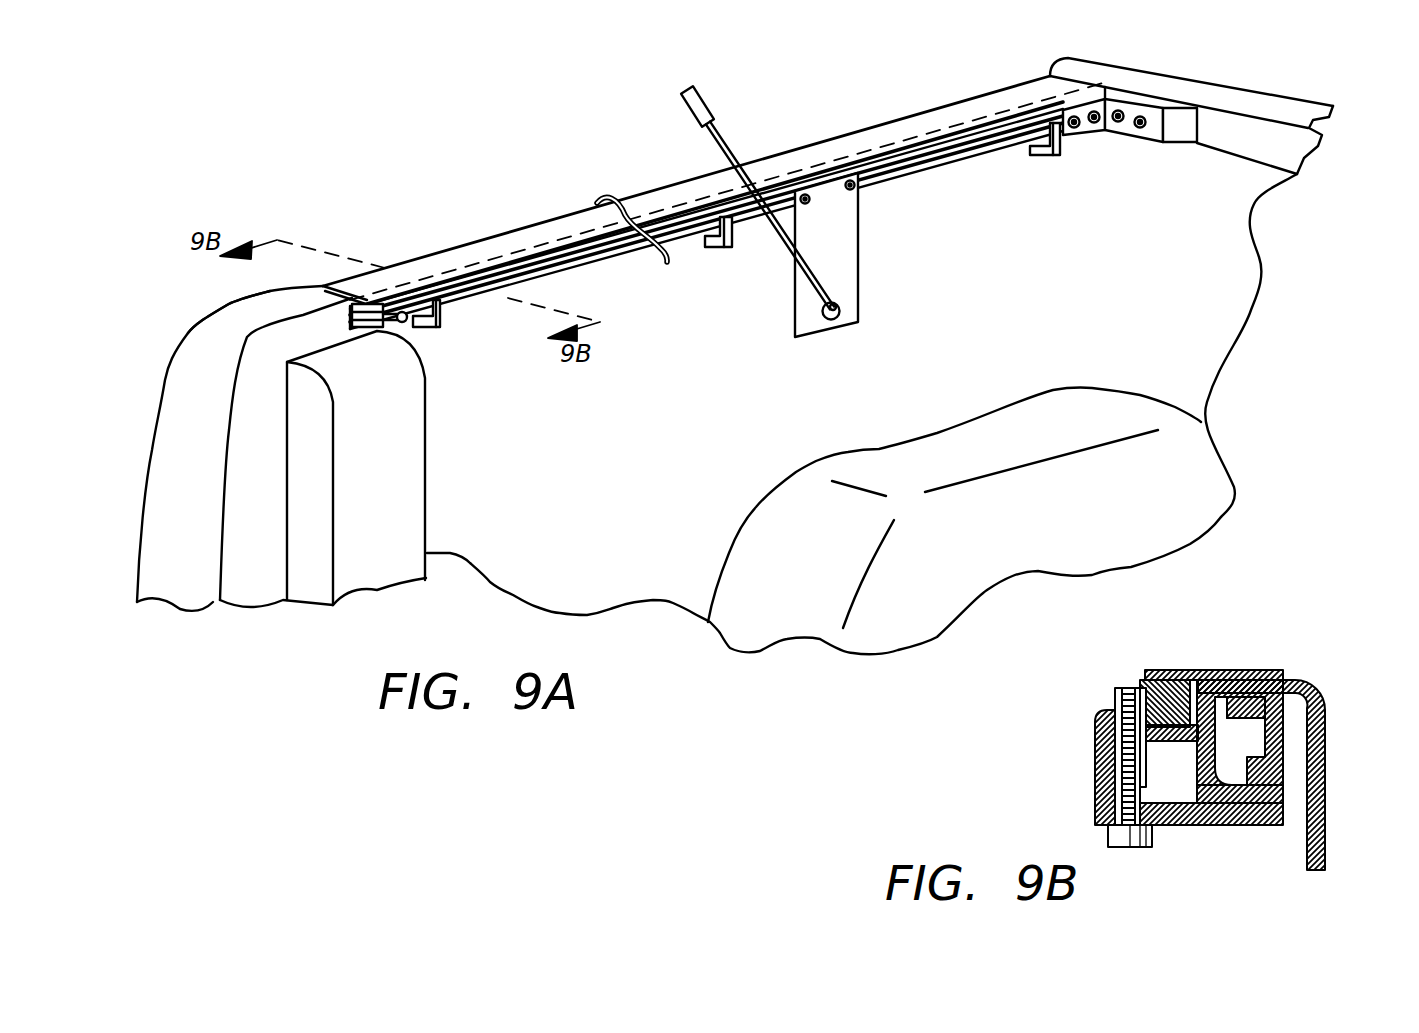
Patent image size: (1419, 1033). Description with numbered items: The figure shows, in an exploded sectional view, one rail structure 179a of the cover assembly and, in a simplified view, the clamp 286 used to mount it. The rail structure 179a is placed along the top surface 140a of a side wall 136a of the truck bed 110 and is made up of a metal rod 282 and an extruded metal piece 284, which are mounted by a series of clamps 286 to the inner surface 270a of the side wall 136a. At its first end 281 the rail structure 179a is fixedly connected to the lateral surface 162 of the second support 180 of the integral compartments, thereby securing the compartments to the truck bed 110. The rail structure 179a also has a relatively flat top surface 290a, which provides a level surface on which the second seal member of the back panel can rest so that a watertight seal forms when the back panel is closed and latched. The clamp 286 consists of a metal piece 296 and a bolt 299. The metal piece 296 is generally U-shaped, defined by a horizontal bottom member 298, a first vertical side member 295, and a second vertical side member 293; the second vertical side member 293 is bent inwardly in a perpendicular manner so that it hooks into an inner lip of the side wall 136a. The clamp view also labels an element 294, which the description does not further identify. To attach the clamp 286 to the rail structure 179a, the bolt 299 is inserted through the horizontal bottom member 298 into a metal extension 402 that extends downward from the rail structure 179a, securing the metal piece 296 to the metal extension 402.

In FIG. 9A, the truck bed 110 is at (190, 462).
In FIG. 9A, the side wall 136a is at (212, 367).
In FIG. 9A, the top surface 140a is at (418, 264).
In FIG. 9A, the lateral surface 162 is at (1232, 123).
In FIG. 9A, the rail structure 179a is at (557, 238).
In FIG. 9A, the second support 180 is at (1293, 117).
In FIG. 9A, the inner surface 270a is at (305, 338).
In FIG. 9A, the first end 281 is at (1107, 97).
In FIG. 9A, the metal rod 282 is at (917, 172).
In FIG. 9A, the extruded metal piece 284 is at (968, 117).
In FIG. 9A, the clamp 286 is at (432, 330).
In FIG. 9B, the clamp 286 is at (1193, 668).
In FIG. 9A, the flat top surface 290a is at (673, 203).
In FIG. 9B, the second vertical side member 293 is at (1287, 744).
In FIG. 9B, the channel member 294 is at (1248, 707).
In FIG. 9B, the first vertical side member 295 is at (1092, 722).
In FIG. 9B, the metal piece 296 is at (1257, 810).
In FIG. 9B, the horizontal bottom member 298 is at (1190, 827).
In FIG. 9B, the bolt 299 is at (1123, 838).
In FIG. 9B, the metal extension 402 is at (1147, 683).